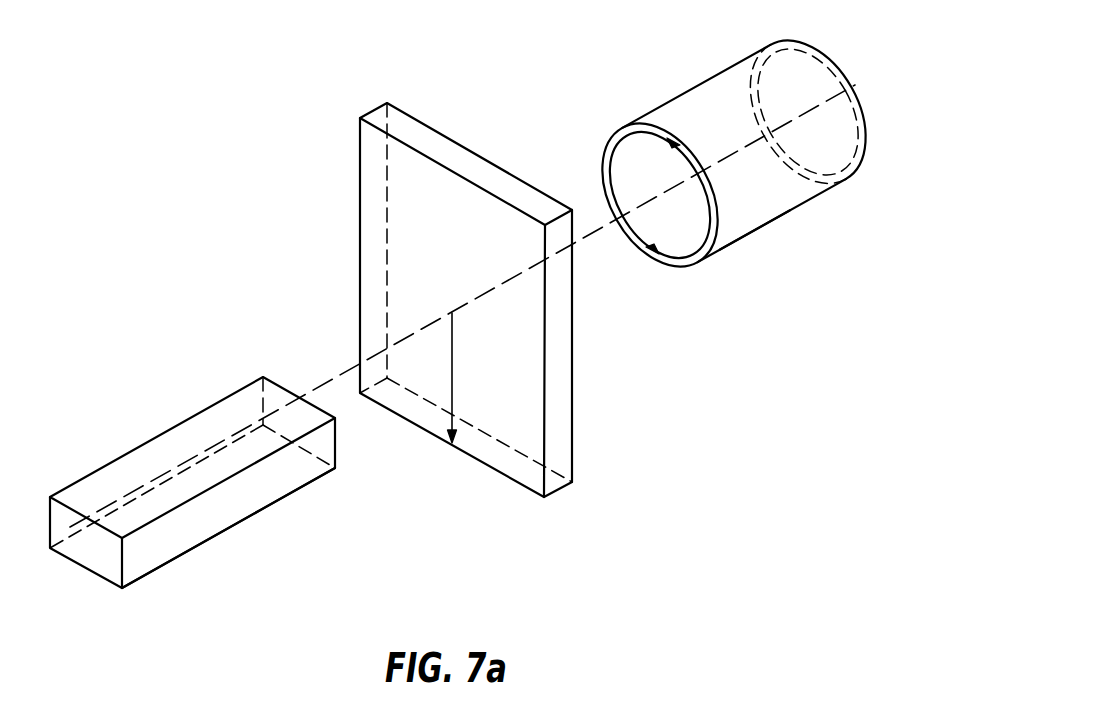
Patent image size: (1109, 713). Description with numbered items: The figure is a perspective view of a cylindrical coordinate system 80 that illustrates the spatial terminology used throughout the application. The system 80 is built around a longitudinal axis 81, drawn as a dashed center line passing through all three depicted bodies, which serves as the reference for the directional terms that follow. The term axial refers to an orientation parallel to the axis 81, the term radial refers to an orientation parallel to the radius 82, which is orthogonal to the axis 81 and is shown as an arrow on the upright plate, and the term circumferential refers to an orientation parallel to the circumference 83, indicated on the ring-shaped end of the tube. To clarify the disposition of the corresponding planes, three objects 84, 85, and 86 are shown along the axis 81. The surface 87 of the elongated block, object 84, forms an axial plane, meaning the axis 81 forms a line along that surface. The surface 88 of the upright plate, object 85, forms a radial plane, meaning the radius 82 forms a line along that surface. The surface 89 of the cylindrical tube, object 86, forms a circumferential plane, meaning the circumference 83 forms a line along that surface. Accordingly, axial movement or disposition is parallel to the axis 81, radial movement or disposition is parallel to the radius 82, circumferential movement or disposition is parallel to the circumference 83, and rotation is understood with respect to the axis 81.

The cylindrical coordinate system 80 is at (296, 151).
The longitudinal axis 81 is at (848, 84).
The radius 82 is at (452, 370).
The circumference 83 is at (602, 153).
The object 84 is at (159, 586).
The object 85 is at (594, 491).
The object 86 is at (770, 242).
The surface 87 is at (147, 460).
The surface 88 is at (377, 252).
The surface 89 is at (693, 82).